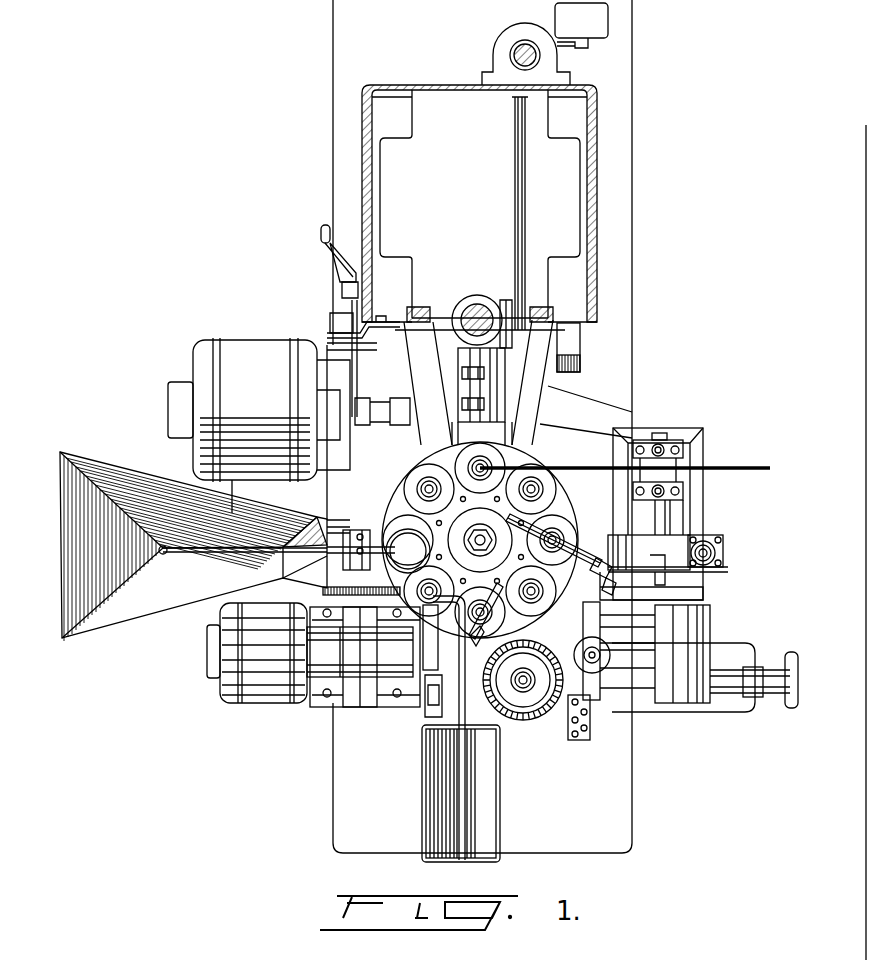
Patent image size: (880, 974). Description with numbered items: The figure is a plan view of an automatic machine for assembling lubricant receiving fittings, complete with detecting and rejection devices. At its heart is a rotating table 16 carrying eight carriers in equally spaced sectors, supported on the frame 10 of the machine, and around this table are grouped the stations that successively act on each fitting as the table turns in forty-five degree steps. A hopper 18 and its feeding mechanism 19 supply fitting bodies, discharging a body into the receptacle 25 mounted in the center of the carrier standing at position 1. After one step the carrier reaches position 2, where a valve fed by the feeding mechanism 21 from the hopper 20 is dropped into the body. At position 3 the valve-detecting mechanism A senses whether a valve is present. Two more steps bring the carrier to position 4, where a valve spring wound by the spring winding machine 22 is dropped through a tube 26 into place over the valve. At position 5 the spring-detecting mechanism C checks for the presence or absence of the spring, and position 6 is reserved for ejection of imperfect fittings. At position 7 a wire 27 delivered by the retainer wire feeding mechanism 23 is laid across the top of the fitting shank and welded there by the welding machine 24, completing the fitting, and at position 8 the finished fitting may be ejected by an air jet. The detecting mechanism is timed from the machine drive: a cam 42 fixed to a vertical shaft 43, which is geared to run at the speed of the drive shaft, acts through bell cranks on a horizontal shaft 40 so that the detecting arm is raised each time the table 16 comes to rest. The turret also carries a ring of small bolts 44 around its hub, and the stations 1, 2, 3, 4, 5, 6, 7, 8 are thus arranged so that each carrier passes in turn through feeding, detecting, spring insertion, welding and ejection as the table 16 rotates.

The carrier position 1 is at (408, 544).
The carrier position 2 is at (429, 591).
The carrier position 3 is at (480, 612).
The carrier position 4 is at (531, 590).
The carrier position 5 is at (552, 539).
The carrier position 6 is at (531, 489).
The carrier position 7 is at (480, 468).
The carrier position 8 is at (429, 488).
The frame 10 is at (565, 483).
The rotating table 16 is at (538, 462).
The hopper 18 is at (118, 636).
The feeding mechanism 19 is at (392, 528).
The hopper 20 is at (422, 812).
The feeding mechanism 21 is at (422, 650).
The spring winding machine 22 is at (663, 692).
The retainer wire feeding mechanism 23 is at (700, 470).
The welding machine 24 is at (477, 302).
The receptacle 25 is at (427, 488).
The tube 26 is at (534, 593).
The wire 27 is at (585, 467).
The horizontal shaft 40 is at (581, 651).
The cam 42 is at (539, 712).
The vertical shaft 43 is at (523, 692).
The bolts 44 is at (496, 502).
The valve-detecting mechanism A is at (493, 632).
The spring-detecting mechanism C is at (577, 546).